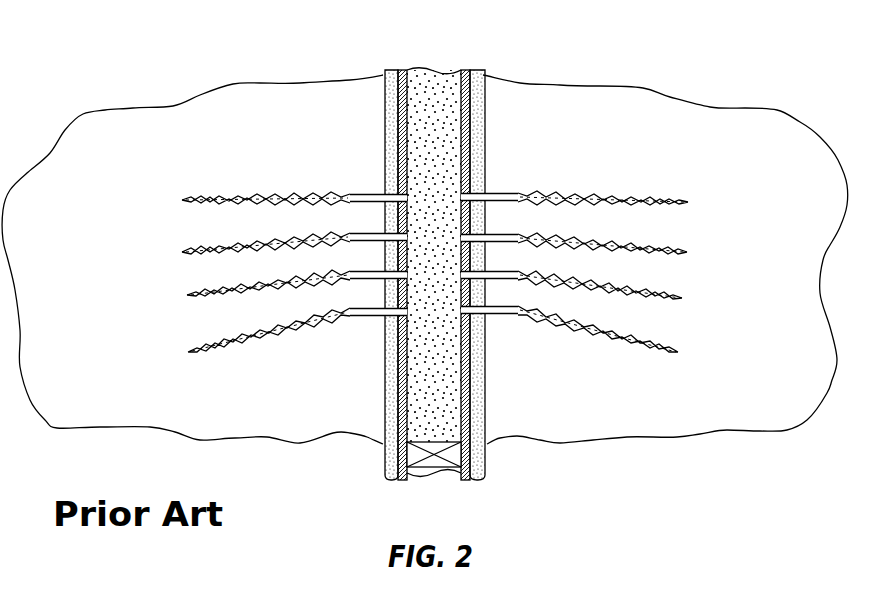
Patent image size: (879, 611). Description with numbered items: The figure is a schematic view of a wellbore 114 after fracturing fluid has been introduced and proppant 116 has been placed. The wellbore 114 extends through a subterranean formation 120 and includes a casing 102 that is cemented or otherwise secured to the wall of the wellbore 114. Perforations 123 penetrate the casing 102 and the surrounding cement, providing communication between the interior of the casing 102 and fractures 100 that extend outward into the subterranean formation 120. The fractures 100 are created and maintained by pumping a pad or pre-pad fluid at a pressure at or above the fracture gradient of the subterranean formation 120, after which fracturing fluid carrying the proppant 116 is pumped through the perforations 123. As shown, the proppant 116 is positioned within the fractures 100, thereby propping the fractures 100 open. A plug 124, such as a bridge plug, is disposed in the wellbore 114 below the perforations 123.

The fractures 100 is at (182, 200).
The casing 102 is at (399, 92).
The wellbore 114 is at (388, 72).
The proppant 116 is at (451, 62).
The subterranean formation 120 is at (72, 215).
The perforations 123 is at (487, 232).
The plug 124 is at (432, 468).